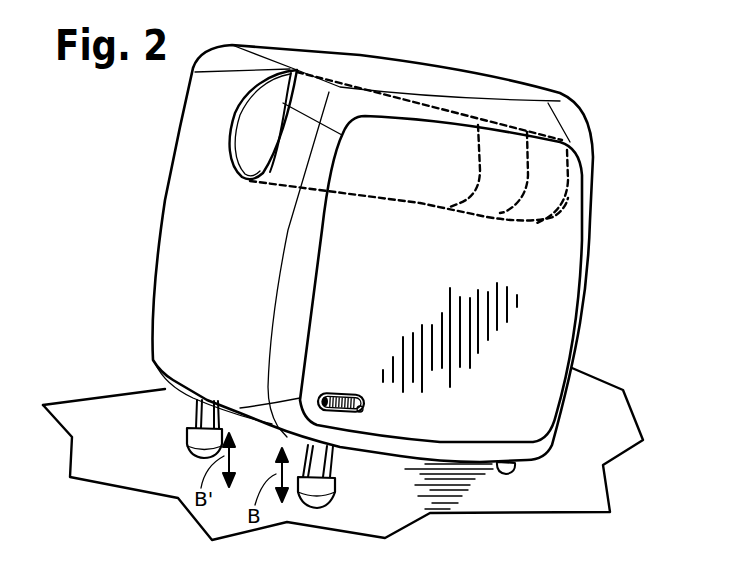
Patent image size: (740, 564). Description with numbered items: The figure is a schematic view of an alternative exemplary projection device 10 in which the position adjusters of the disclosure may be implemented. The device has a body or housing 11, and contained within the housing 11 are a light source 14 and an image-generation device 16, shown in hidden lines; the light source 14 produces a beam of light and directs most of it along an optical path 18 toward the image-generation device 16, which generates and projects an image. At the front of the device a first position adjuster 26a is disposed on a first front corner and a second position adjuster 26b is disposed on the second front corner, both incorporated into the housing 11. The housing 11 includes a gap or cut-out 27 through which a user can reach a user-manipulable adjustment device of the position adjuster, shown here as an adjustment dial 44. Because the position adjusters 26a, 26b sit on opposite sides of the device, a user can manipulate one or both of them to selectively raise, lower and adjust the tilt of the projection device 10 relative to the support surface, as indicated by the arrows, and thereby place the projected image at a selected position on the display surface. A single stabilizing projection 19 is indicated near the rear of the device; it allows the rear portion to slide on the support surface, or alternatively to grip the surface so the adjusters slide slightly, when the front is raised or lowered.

The projection device 10 is at (604, 75).
The housing 11 is at (592, 136).
The light source 14 is at (537, 128).
The image-generation device 16 is at (492, 113).
The optical path 18 is at (353, 82).
The stabilizing projection 19 is at (513, 466).
The first position adjuster 26a is at (335, 488).
The second position adjuster 26b is at (188, 437).
The cut-out 27 is at (362, 412).
The adjustment dial 44 is at (340, 394).